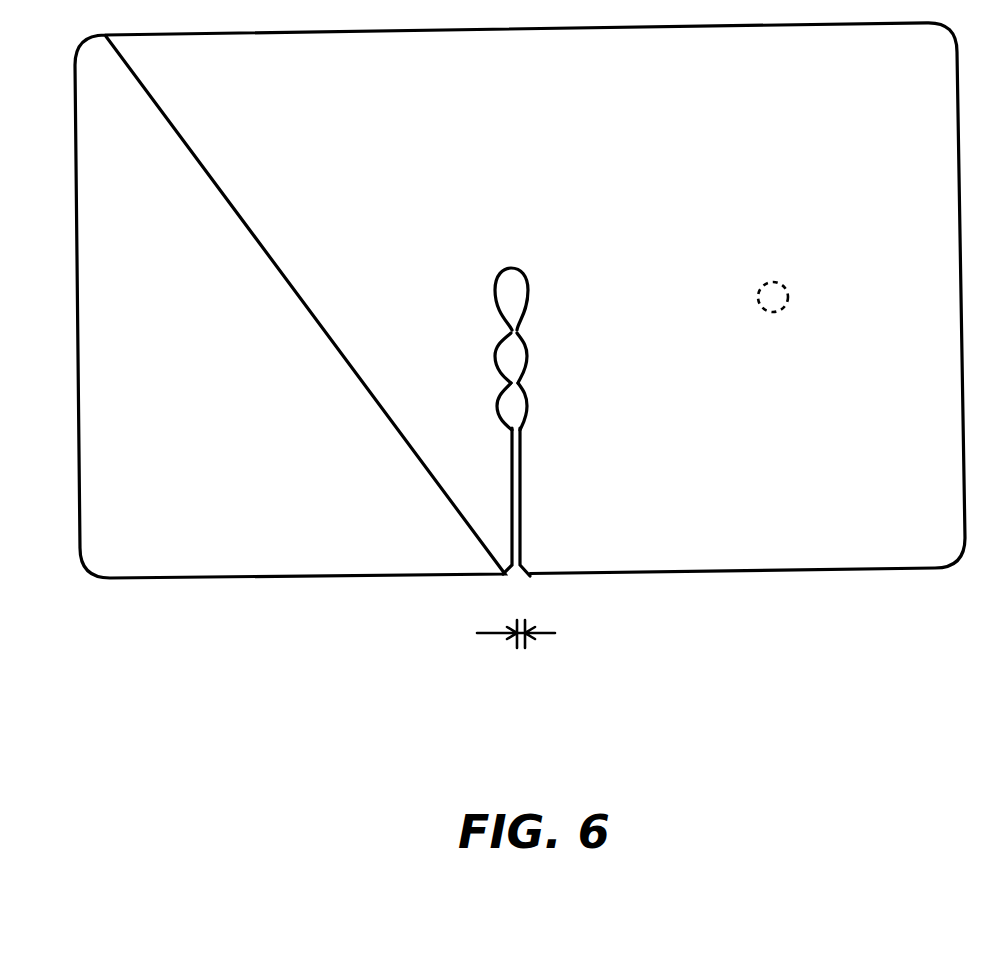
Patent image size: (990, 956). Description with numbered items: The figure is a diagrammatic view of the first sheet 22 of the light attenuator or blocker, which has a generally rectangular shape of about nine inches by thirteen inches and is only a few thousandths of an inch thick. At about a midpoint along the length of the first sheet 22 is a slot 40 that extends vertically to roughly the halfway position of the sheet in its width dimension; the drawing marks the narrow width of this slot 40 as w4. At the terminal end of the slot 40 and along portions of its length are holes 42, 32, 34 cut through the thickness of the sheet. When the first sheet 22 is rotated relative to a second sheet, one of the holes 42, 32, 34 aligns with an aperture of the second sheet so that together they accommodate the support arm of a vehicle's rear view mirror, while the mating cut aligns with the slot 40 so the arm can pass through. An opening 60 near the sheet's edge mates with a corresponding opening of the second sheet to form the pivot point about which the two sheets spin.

The first sheet 22 is at (870, 569).
The slot 40 is at (510, 527).
The hole 42 is at (530, 290).
The hole 32 is at (528, 348).
The hole 34 is at (528, 400).
The opening 60 is at (789, 291).
The channel width w4 is at (522, 650).